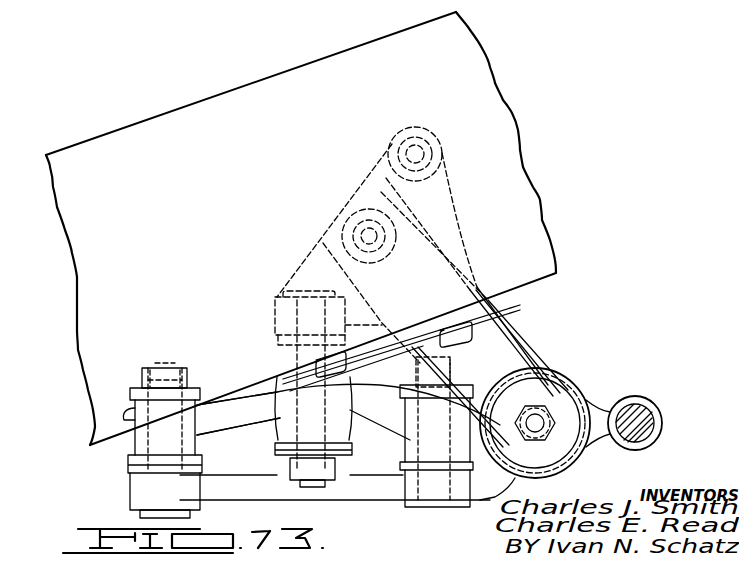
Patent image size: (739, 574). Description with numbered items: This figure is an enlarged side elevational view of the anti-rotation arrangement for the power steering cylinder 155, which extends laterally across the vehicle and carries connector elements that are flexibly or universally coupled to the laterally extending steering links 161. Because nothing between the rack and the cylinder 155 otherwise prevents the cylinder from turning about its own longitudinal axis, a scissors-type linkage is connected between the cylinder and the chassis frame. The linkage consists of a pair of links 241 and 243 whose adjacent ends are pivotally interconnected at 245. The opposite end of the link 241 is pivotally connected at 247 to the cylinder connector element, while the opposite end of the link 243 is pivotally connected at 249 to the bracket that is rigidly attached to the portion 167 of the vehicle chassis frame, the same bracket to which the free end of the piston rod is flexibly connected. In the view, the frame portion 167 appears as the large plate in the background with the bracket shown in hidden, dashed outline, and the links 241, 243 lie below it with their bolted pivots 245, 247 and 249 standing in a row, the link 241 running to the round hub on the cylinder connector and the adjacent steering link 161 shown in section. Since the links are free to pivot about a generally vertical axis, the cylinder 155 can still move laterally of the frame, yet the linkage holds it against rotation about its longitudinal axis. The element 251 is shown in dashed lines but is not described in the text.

The portion of vehicle chassis frame 167 is at (488, 104).
The bracket (dashed) 251 is at (300, 268).
The power steering cylinder 155 is at (570, 377).
The steering links 161 is at (648, 420).
The link 243 is at (347, 494).
The pivotal interconnection 245 is at (128, 412).
The link 241 is at (212, 428).
The pivotal connection 249 is at (332, 418).
The pivotal connection 247 is at (401, 443).